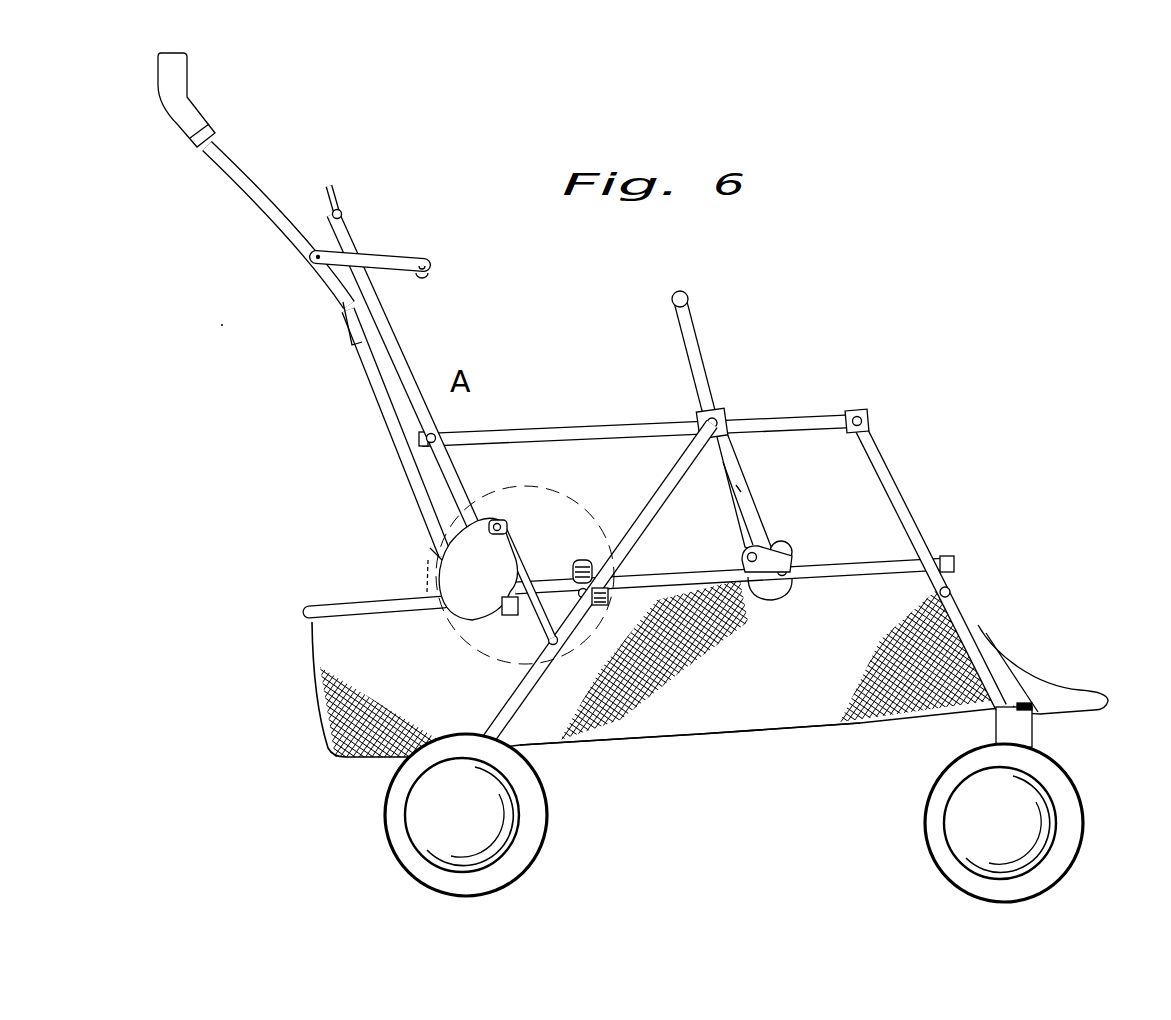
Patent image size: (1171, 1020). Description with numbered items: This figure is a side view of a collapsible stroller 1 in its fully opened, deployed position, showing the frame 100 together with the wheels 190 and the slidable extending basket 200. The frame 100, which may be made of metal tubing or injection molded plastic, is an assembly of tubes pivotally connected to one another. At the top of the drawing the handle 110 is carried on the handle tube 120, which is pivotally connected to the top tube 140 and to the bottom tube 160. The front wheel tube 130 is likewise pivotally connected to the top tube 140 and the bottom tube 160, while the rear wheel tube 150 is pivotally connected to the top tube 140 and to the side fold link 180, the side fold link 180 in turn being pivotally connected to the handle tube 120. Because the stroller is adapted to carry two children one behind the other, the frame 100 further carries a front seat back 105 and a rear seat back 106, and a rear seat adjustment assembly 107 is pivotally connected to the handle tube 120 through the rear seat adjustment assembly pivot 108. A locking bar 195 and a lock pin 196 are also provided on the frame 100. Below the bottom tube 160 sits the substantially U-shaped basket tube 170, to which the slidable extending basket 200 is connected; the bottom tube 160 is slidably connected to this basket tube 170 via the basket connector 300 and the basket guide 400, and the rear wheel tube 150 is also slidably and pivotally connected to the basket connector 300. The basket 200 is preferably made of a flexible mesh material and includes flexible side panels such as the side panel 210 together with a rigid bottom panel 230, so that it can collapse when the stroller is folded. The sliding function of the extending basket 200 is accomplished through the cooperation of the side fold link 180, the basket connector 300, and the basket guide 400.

The collapsible stroller 1 is at (916, 175).
The frame 100 is at (554, 402).
The front seat back 105 is at (708, 382).
The rear seat back 106 is at (380, 303).
The rear seat adjustment assembly 107 is at (383, 426).
The rear seat adjustment assembly pivot 108 is at (427, 557).
The handle 110 is at (185, 63).
The handle tube 120 is at (246, 163).
The front wheel tube 130 is at (907, 497).
The top tube 140 is at (810, 413).
The rear wheel tube 150 is at (513, 703).
The bottom tube 160 is at (883, 563).
The basket tube 170 is at (305, 617).
The side fold link 180 is at (588, 560).
The wheels 190 is at (530, 803).
The locking bar 195 is at (413, 252).
The lock pin 196 is at (956, 593).
The slidable extending basket 200 is at (805, 748).
The flexible side panel 210 is at (935, 707).
The rigid bottom panel 230 is at (706, 740).
The basket connector 300 is at (588, 540).
The basket guide 400 is at (488, 641).